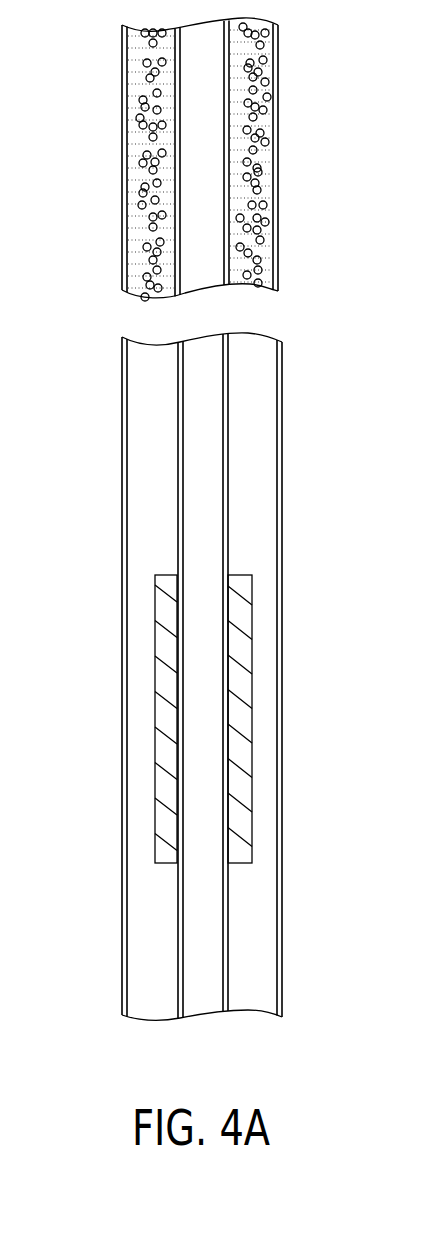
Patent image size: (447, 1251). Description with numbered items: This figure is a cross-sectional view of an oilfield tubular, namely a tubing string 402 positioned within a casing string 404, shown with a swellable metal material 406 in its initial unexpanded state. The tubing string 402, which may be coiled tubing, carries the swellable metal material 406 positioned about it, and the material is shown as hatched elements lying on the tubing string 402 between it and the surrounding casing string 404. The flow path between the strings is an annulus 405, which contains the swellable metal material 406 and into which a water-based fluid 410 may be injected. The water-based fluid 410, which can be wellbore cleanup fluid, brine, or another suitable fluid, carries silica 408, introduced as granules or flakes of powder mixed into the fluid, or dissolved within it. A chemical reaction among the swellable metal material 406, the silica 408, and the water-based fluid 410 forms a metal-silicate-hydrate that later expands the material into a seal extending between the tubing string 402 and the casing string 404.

The tubing string 402 is at (228, 520).
The casing string 404 is at (282, 495).
The annulus 405 is at (206, 677).
The swellable metal material 406 is at (155, 697).
The silica 408 is at (140, 216).
The water-based fluid 410 is at (205, 164).